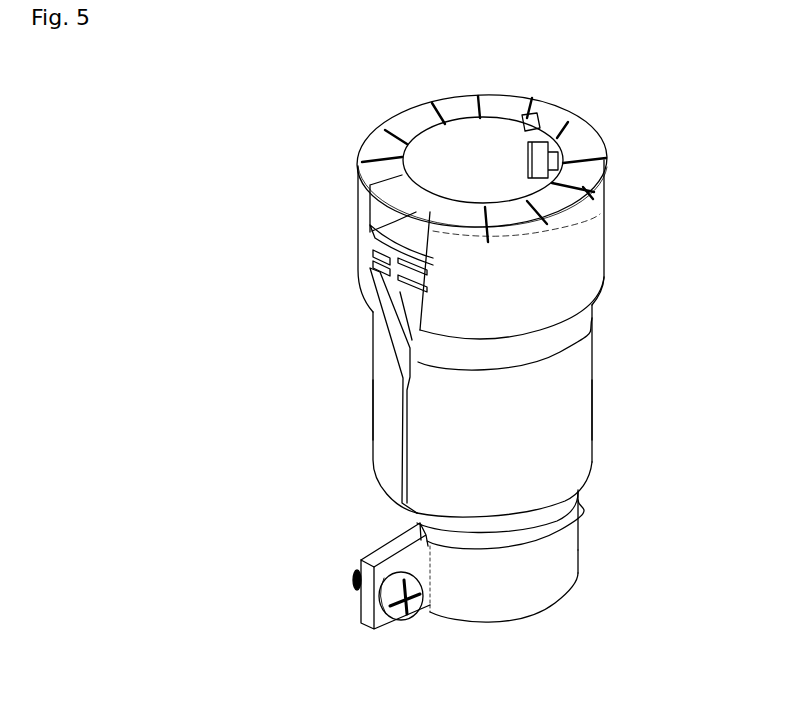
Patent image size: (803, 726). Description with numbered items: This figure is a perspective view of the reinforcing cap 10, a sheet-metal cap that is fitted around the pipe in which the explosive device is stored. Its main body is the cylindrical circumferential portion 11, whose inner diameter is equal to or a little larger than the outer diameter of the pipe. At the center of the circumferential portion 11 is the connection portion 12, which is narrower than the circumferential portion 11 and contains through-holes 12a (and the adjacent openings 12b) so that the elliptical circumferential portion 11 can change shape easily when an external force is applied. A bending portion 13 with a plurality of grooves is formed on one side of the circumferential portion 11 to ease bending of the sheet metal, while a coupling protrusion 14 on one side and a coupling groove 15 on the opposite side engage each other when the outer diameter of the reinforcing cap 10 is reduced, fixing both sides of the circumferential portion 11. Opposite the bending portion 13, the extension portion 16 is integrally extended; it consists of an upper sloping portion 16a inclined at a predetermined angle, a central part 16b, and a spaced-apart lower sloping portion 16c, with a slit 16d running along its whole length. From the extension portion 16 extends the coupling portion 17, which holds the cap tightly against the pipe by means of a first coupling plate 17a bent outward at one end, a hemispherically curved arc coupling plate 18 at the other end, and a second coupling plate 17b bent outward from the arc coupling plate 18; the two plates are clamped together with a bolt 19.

The reinforcing cap 10 is at (256, 113).
The circumferential portion 11 is at (593, 243).
The connection portion 12 is at (373, 262).
The through-holes 12a is at (372, 243).
The latch slots 12b is at (422, 278).
The bending portion 13 is at (412, 120).
The coupling protrusion 14 is at (560, 135).
The coupling groove 15 is at (528, 155).
The extension portion 16 is at (700, 327).
The upper sloping portion 16a is at (572, 327).
The central part 16b is at (572, 413).
The lower sloping portion 16c is at (518, 515).
The slit 16d is at (410, 345).
The coupling portion 17 is at (520, 537).
The first coupling plate 17a is at (360, 613).
The second coupling plate 17b is at (387, 623).
The arc coupling plate 18 is at (553, 596).
The bolt 19 is at (424, 585).